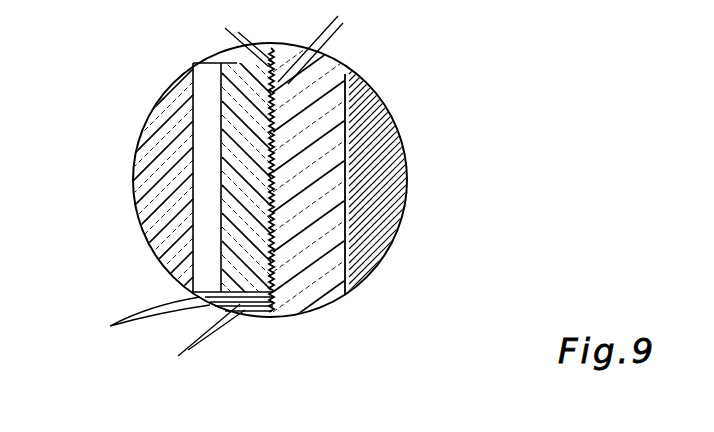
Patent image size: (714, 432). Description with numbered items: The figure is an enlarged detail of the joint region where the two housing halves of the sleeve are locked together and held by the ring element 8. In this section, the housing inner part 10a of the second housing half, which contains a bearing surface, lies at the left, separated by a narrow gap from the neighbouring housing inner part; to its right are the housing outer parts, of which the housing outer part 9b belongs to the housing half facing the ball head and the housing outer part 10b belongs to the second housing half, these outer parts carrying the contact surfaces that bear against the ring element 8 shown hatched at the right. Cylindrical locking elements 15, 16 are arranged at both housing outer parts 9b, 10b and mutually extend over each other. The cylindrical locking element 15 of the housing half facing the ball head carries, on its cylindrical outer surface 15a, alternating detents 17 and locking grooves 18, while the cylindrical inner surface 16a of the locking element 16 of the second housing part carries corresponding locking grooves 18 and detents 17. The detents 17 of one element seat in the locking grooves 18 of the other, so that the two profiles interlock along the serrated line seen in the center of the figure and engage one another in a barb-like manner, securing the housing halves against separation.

The ring element 8 is at (385, 162).
The housing outer part 9b is at (265, 74).
The housing inner part 10a is at (165, 185).
The housing outer part 10b is at (310, 312).
The cylindrical locking element 15 is at (236, 126).
The cylindrical outer surface 15a is at (272, 232).
The cylindrical locking element 16 is at (347, 73).
The cylindrical inner surface 16a is at (270, 246).
The detent 17 is at (338, 16).
The locking groove 18 is at (228, 27).